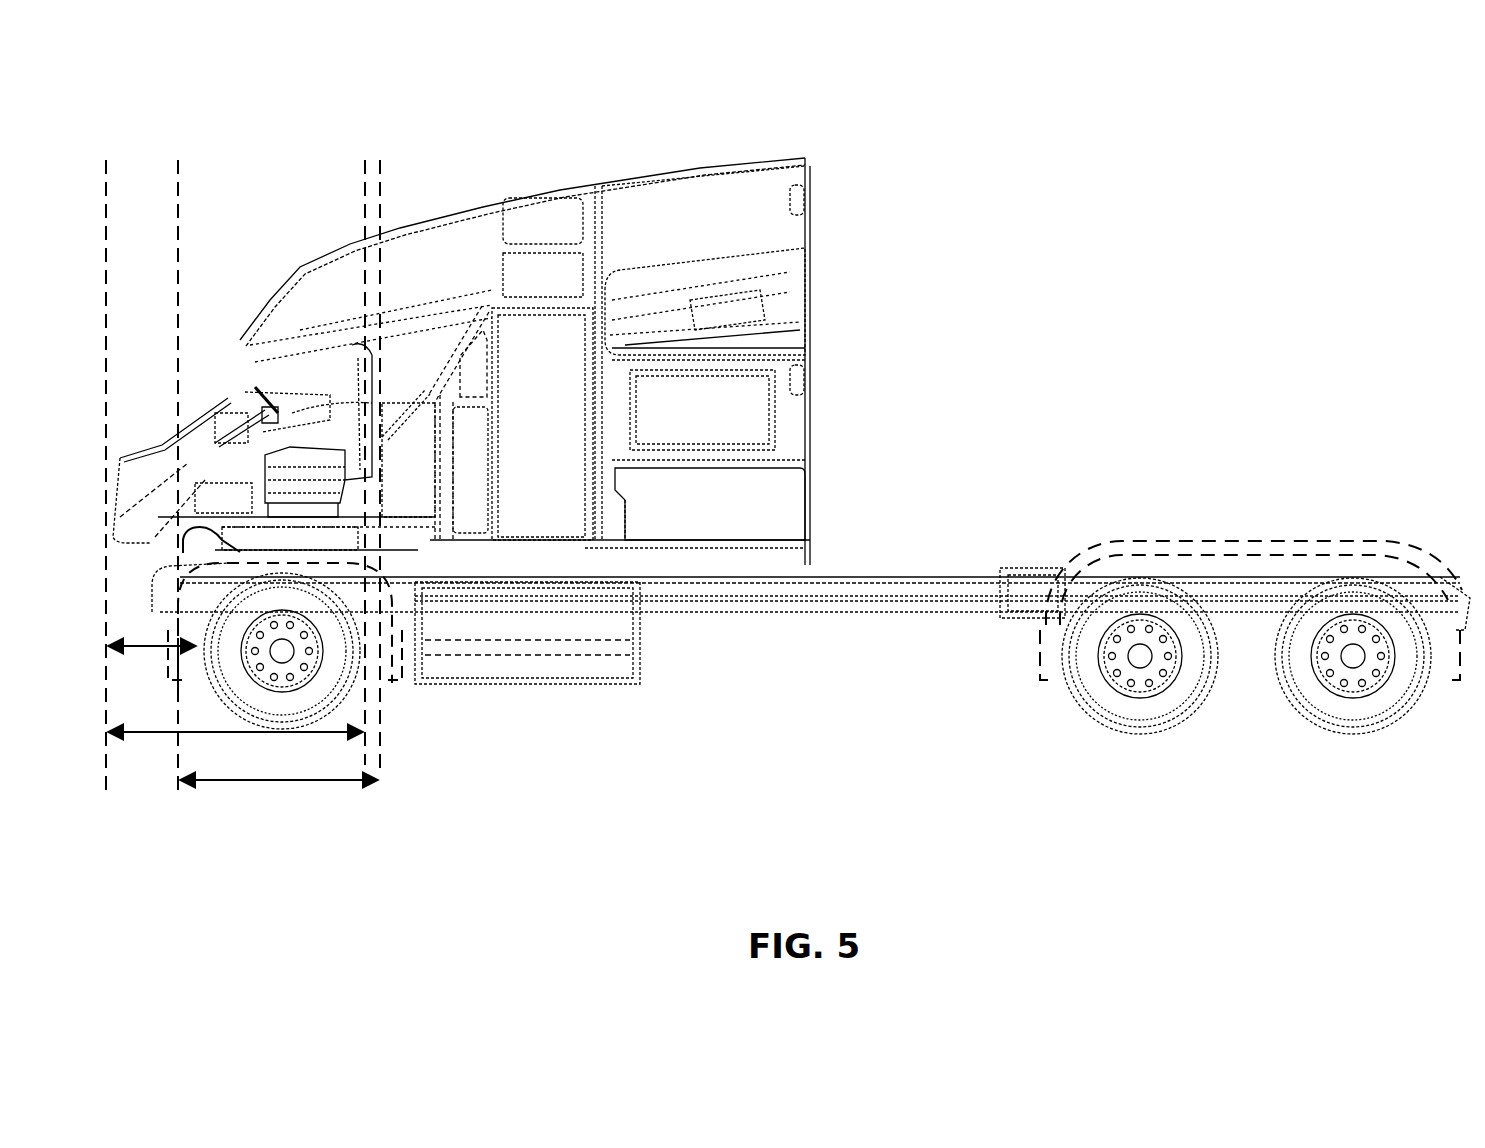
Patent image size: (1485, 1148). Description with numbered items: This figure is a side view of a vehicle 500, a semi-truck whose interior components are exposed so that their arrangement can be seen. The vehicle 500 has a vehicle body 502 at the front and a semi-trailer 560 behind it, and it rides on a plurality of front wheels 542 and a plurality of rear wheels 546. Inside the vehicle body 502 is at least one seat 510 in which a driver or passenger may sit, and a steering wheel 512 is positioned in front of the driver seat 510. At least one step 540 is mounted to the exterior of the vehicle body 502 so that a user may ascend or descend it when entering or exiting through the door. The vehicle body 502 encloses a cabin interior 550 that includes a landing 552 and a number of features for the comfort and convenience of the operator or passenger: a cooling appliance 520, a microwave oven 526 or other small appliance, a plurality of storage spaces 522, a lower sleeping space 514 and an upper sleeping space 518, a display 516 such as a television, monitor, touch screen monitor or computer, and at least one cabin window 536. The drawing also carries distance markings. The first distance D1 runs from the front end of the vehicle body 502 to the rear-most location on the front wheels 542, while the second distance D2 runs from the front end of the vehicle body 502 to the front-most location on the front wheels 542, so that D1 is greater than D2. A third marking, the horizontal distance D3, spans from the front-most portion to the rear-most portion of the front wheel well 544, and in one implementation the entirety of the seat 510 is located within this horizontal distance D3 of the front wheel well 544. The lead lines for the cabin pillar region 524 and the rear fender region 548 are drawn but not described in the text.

The vehicle 500 is at (1210, 197).
The vehicle body 502 is at (287, 225).
The seat 510 is at (352, 380).
The steering wheel 512 is at (250, 390).
The lower sleeping space 514 is at (773, 515).
The display 516 is at (702, 410).
The upper sleeping space 518 is at (783, 348).
The cooling appliance 520 is at (542, 424).
The storage spaces 522 is at (545, 218).
The pillar 524 is at (470, 372).
The microwave oven 526 is at (543, 275).
The cabin window 536 is at (705, 301).
The step 540 is at (532, 590).
The front wheels 542 is at (342, 685).
The front wheel well 544 is at (190, 560).
The rear wheels 546 is at (1303, 698).
The rear fender 548 is at (1362, 540).
The cabin interior 550 is at (532, 503).
The landing 552 is at (570, 530).
The semi-trailer 560 is at (1125, 492).
The first distance D1 is at (235, 749).
The second distance D2 is at (152, 632).
The horizontal distance D3 is at (279, 799).